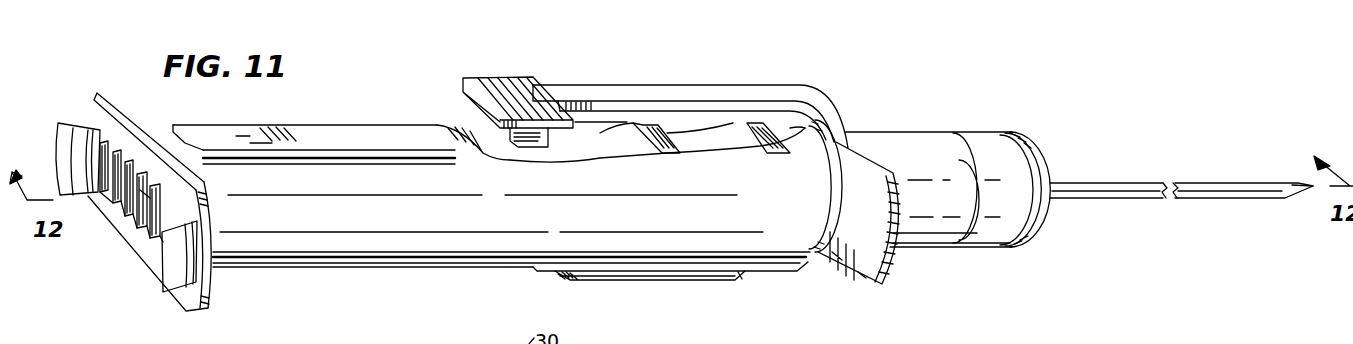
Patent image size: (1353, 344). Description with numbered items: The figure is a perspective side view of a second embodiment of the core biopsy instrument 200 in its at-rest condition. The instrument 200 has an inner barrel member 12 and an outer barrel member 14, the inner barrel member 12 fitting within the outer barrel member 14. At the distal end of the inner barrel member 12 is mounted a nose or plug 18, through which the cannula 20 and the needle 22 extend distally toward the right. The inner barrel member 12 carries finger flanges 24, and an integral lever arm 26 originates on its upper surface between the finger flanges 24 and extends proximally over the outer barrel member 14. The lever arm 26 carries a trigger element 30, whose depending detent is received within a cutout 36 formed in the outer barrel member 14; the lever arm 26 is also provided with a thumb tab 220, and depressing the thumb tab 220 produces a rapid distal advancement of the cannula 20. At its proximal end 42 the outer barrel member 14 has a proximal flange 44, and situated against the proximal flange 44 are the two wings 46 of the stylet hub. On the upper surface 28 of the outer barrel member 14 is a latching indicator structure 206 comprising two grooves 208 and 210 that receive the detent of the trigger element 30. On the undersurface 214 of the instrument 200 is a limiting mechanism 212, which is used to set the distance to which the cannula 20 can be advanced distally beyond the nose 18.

The inner barrel member 12 is at (913, 150).
The outer barrel member 14 is at (301, 178).
The nose or plug 18 is at (1007, 207).
The cannula 20 is at (1197, 187).
The needle 22 is at (1300, 196).
The finger flanges 24 is at (860, 267).
The lever arm 26 is at (733, 93).
The upper surface 28 is at (415, 137).
The trigger element 30 is at (524, 143).
The cutout 36 is at (548, 143).
The proximal end 42 is at (220, 240).
The proximal flange 44 is at (197, 307).
The wings 46 is at (92, 175).
The core biopsy instrument 200 is at (930, 88).
The latching indicator structure 206 is at (693, 112).
The groove 208 is at (668, 155).
The groove 210 is at (776, 155).
The limiting mechanism 212 is at (689, 290).
The undersurface 214 is at (531, 272).
The thumb tab 220 is at (500, 343).